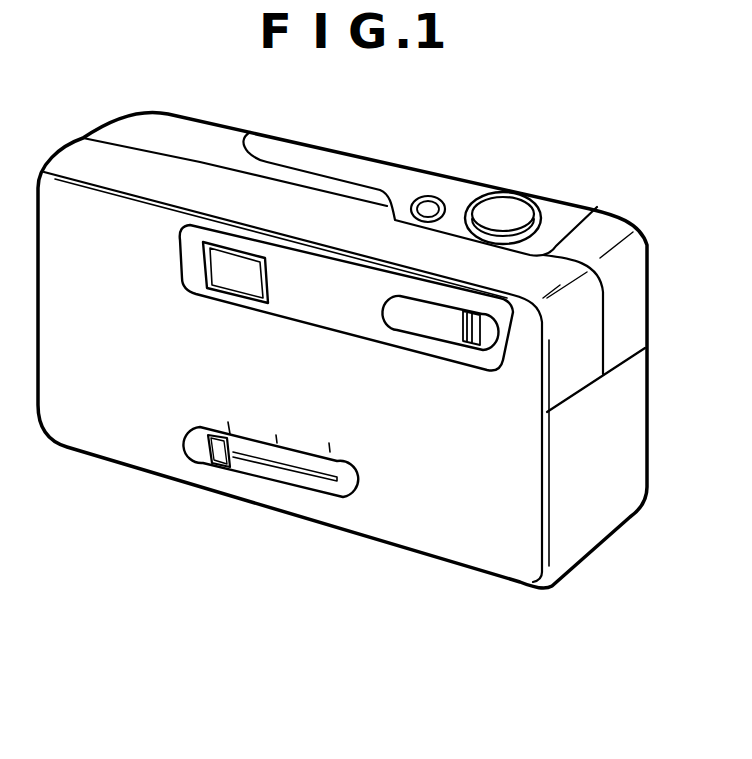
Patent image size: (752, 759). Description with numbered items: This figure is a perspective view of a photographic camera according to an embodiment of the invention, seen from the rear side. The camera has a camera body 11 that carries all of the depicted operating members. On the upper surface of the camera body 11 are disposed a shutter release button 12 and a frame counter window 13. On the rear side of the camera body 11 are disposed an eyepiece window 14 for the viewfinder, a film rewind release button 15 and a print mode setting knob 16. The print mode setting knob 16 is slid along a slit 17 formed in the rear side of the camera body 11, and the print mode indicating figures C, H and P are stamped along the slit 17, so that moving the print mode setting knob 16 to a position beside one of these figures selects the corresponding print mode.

The camera body 11 is at (452, 583).
The shutter release button 12 is at (516, 216).
The frame counter window 13 is at (430, 205).
The eyepiece window 14 is at (238, 278).
The film rewind release button 15 is at (462, 332).
The print mode setting knob 16 is at (203, 461).
The slit 17 is at (307, 478).